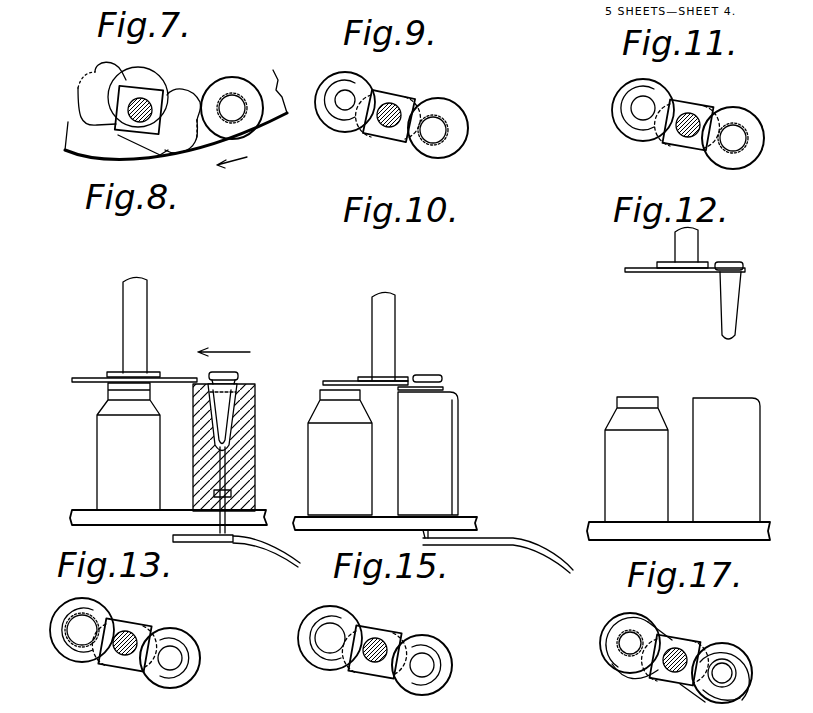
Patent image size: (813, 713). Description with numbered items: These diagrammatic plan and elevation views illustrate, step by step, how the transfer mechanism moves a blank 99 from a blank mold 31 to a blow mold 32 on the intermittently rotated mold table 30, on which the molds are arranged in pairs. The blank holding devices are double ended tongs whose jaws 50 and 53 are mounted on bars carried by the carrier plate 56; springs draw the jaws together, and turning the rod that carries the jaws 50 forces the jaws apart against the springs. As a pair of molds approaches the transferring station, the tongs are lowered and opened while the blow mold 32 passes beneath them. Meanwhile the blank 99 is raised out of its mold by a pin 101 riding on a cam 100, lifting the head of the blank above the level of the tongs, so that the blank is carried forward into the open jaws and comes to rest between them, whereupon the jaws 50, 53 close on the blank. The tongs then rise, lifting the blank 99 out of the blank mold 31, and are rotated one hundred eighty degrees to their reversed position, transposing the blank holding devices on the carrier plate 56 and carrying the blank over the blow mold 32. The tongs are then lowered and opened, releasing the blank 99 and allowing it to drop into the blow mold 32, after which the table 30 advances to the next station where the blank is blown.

In FIG. 7, the rotary table 30 is at (73, 152).
In FIG. 8, the rotary table 30 is at (78, 510).
In FIG. 10, the rotary table 30 is at (470, 517).
In FIG. 12, the rotary table 30 is at (638, 532).
In FIG. 7, the blank mold 31 is at (231, 82).
In FIG. 9, the blank mold 31 is at (442, 100).
In FIG. 11, the blank mold 31 is at (730, 120).
In FIG. 8, the blank mold 31 is at (254, 463).
In FIG. 10, the blank mold 31 is at (459, 437).
In FIG. 12, the blank mold 31 is at (707, 398).
In FIG. 13, the blank mold 31 is at (200, 657).
In FIG. 15, the blank mold 31 is at (447, 658).
In FIG. 17, the blank mold 31 is at (742, 655).
In FIG. 7, the blow mold 32 is at (120, 85).
In FIG. 9, the blow mold 32 is at (332, 78).
In FIG. 11, the blow mold 32 is at (618, 127).
In FIG. 8, the blow mold 32 is at (100, 457).
In FIG. 10, the blow mold 32 is at (314, 413).
In FIG. 12, the blow mold 32 is at (605, 458).
In FIG. 13, the blow mold 32 is at (55, 645).
In FIG. 15, the blow mold 32 is at (300, 640).
In FIG. 17, the blow mold 32 is at (600, 645).
In FIG. 7, the jaw 50 is at (80, 110).
In FIG. 9, the jaw 50 is at (437, 113).
In FIG. 11, the jaw 50 is at (742, 128).
In FIG. 13, the jaw 50 is at (88, 653).
In FIG. 15, the jaw 50 is at (338, 653).
In FIG. 17, the jaw 50 is at (622, 675).
In FIG. 7, the jaw 53 is at (95, 70).
In FIG. 9, the jaw 53 is at (350, 87).
In FIG. 11, the jaw 53 is at (717, 152).
In FIG. 13, the jaw 53 is at (100, 620).
In FIG. 15, the jaw 53 is at (347, 620).
In FIG. 17, the jaw 53 is at (682, 622).
In FIG. 7, the carrier plate 56 is at (130, 127).
In FIG. 9, the carrier plate 56 is at (378, 135).
In FIG. 11, the carrier plate 56 is at (688, 125).
In FIG. 13, the carrier plate 56 is at (125, 643).
In FIG. 15, the carrier plate 56 is at (375, 650).
In FIG. 17, the carrier plate 56 is at (675, 660).
In FIG. 7, the blank 99 is at (245, 118).
In FIG. 9, the blank 99 is at (441, 123).
In FIG. 11, the blank 99 is at (733, 157).
In FIG. 8, the blank 99 is at (233, 373).
In FIG. 10, the blank 99 is at (443, 377).
In FIG. 12, the blank 99 is at (729, 300).
In FIG. 13, the blank 99 is at (70, 622).
In FIG. 15, the blank 99 is at (320, 628).
In FIG. 17, the blank 99 is at (622, 632).
In FIG. 8, the cam 100 is at (217, 543).
In FIG. 10, the cam 100 is at (507, 547).
In FIG. 8, the pin 101 is at (235, 540).
In FIG. 10, the pin 101 is at (423, 538).